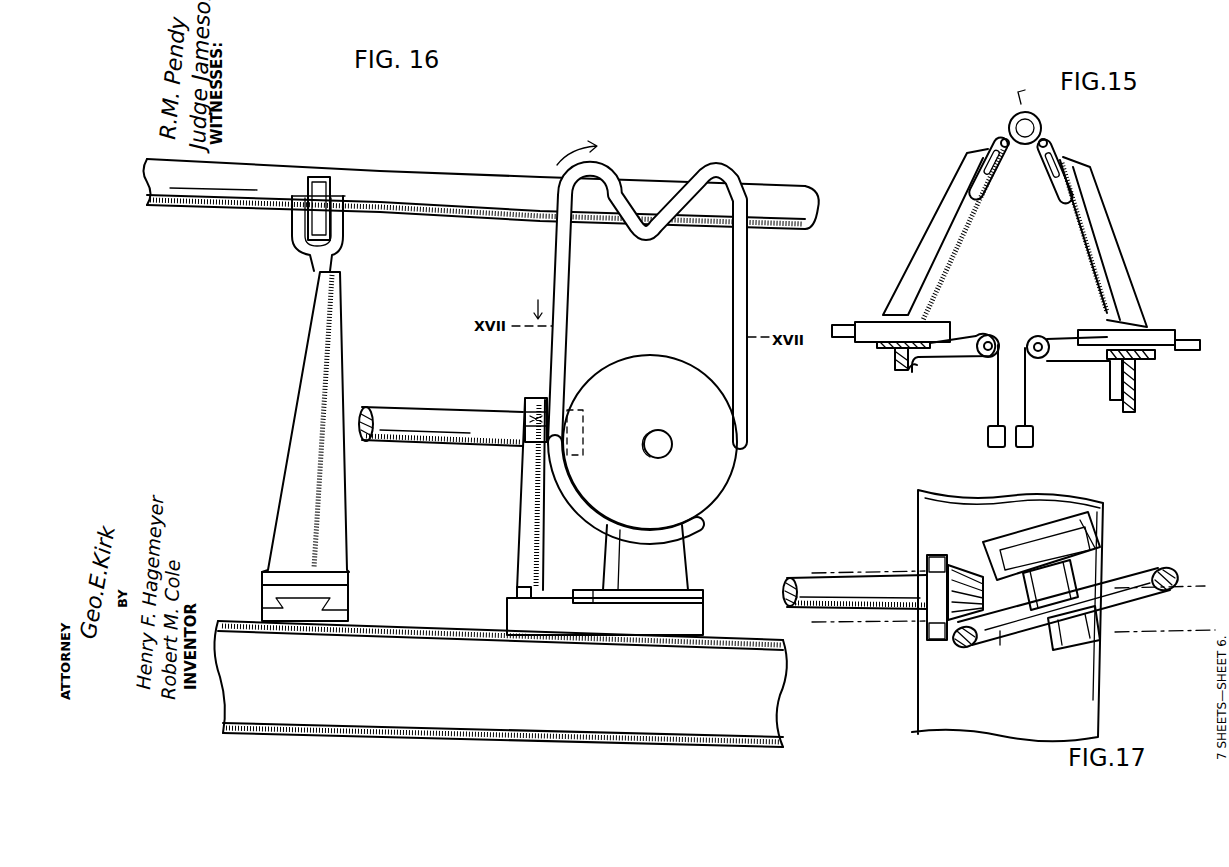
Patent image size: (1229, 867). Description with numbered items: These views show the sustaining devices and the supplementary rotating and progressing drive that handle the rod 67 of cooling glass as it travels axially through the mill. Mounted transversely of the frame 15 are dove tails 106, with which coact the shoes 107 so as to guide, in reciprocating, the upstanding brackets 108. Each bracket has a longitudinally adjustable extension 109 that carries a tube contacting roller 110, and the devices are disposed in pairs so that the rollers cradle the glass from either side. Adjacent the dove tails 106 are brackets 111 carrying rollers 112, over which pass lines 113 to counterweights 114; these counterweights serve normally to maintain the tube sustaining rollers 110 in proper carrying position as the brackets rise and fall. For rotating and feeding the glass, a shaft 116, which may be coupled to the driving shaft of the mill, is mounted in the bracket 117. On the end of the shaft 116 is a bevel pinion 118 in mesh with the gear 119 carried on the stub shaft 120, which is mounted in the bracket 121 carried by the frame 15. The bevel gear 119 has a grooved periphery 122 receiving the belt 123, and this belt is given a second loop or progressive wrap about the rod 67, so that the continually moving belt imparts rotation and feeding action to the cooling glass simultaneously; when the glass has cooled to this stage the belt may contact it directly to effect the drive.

In FIG. 16, the frame 15 is at (408, 629).
In FIG. 15, the frame 15 is at (892, 366).
In FIG. 16, the rod 67 is at (480, 170).
In FIG. 15, the rod 67 is at (1024, 108).
In FIG. 16, the dove tails 106 is at (320, 599).
In FIG. 15, the dove tails 106 is at (850, 343).
In FIG. 16, the shoes 107 is at (350, 590).
In FIG. 15, the shoes 107 is at (873, 321).
In FIG. 16, the upstanding brackets 108 is at (318, 289).
In FIG. 15, the upstanding brackets 108 is at (947, 190).
In FIG. 16, the longitudinally adjustable extensions 109 is at (344, 238).
In FIG. 15, the longitudinally adjustable extensions 109 is at (1000, 143).
In FIG. 16, the tube contacting rollers 110 is at (298, 222).
In FIG. 15, the tube contacting rollers 110 is at (1002, 132).
In FIG. 15, the brackets 111 is at (950, 363).
In FIG. 15, the rollers 112 is at (990, 357).
In FIG. 15, the lines 113 is at (998, 390).
In FIG. 15, the counterweights 114 is at (987, 437).
In FIG. 16, the shaft 116 is at (436, 448).
In FIG. 17, the shaft 116 is at (854, 617).
In FIG. 16, the bracket 117 is at (520, 536).
In FIG. 17, the bracket 117 is at (924, 640).
In FIG. 17, the bevel pinion 118 is at (968, 570).
In FIG. 17, the gear 119 is at (1112, 577).
In FIG. 16, the stub shaft 120 is at (672, 443).
In FIG. 17, the stub shaft 120 is at (1082, 577).
In FIG. 16, the bracket 121 is at (690, 546).
In FIG. 17, the bracket 121 is at (1090, 517).
In FIG. 16, the grooved periphery 122 is at (739, 474).
In FIG. 17, the grooved periphery 122 is at (991, 645).
In FIG. 16, the belt 123 is at (748, 391).
In FIG. 17, the belt 123 is at (958, 647).